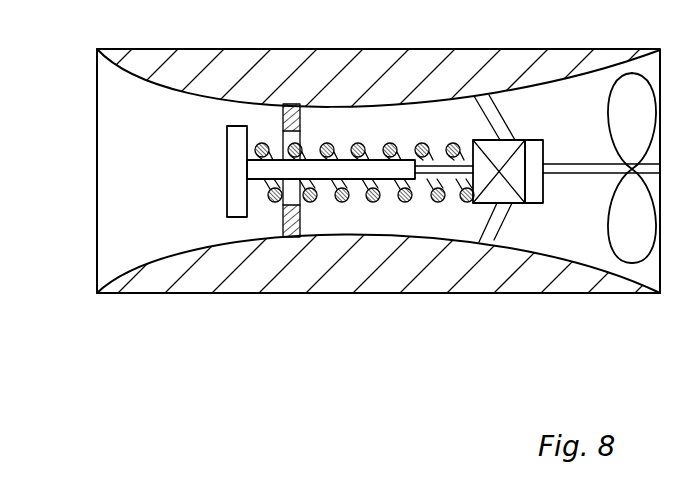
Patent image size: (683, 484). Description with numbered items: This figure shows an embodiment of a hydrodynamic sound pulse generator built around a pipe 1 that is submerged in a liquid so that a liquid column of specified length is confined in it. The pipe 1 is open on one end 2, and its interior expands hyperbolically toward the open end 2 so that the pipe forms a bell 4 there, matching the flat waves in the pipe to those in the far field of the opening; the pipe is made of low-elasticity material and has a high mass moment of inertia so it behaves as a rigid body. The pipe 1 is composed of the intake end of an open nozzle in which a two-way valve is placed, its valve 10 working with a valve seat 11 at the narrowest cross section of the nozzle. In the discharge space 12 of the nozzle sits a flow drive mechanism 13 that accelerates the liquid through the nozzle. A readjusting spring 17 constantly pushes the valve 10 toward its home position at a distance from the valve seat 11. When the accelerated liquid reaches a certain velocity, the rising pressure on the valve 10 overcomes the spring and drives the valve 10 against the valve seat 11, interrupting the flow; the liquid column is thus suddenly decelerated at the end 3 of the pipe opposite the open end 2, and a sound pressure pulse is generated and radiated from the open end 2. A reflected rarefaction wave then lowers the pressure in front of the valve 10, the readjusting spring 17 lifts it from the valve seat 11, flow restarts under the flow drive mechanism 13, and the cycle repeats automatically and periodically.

The pipe 1 is at (170, 117).
The open end of the pipe 2 is at (97, 280).
The end of the pipe opposite the open end 3 is at (262, 120).
The bell 4 is at (145, 258).
The valve 10 is at (237, 217).
The valve seat 11 is at (295, 230).
The discharge space 12 is at (392, 120).
The flow drive mechanism 13 is at (620, 228).
The readjusting spring 17 is at (375, 202).